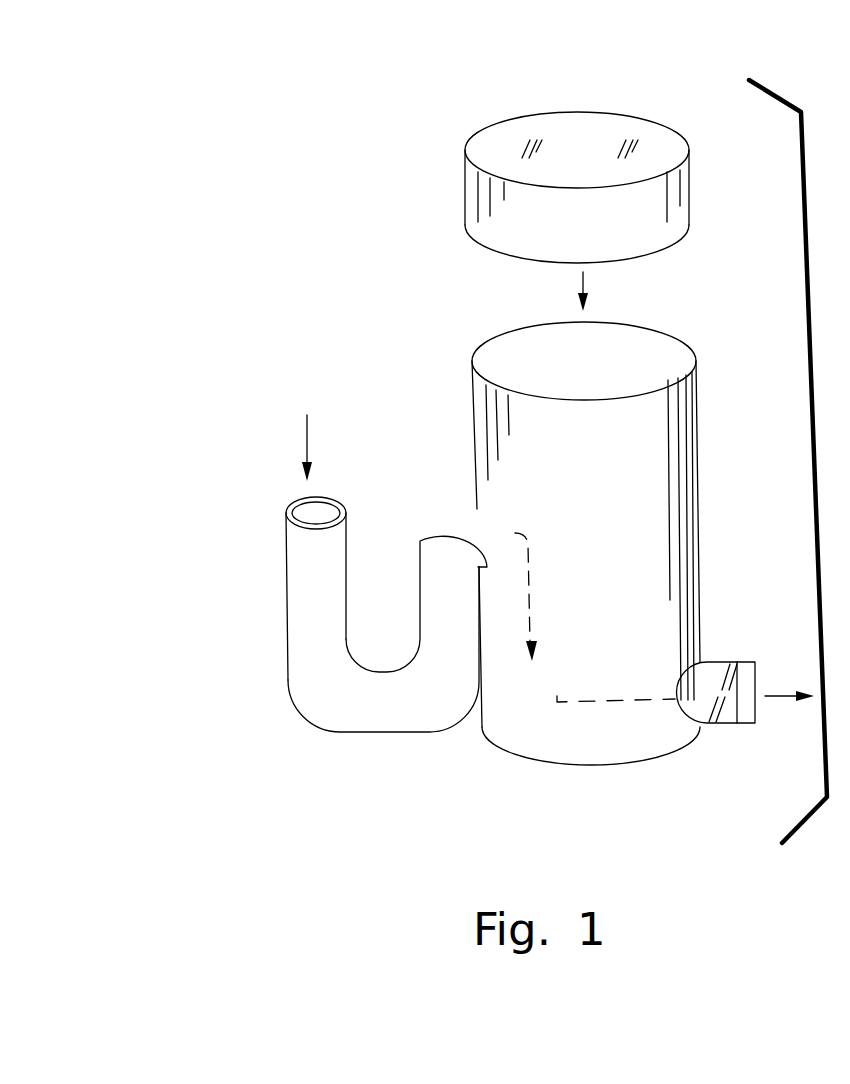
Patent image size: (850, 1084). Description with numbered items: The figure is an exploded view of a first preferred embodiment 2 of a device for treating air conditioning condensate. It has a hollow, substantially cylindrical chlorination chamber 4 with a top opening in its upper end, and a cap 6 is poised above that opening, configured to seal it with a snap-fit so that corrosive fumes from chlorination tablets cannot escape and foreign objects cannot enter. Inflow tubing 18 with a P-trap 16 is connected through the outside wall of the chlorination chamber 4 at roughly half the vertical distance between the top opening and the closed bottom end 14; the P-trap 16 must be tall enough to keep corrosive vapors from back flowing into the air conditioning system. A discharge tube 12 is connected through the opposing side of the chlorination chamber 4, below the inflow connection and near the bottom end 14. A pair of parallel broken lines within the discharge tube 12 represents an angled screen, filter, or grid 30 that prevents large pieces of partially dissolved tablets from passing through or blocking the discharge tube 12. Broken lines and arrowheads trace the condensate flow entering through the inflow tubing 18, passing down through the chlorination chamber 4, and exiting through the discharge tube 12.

The first preferred embodiment 2 is at (410, 301).
The chlorination chamber 4 is at (680, 506).
The cap 6 is at (679, 196).
The discharge tube 12 is at (710, 677).
The closed bottom end 14 is at (640, 760).
The P-trap 16 is at (377, 712).
The inflow tubing 18 is at (310, 595).
The screen, filter, or grid 30 is at (722, 708).